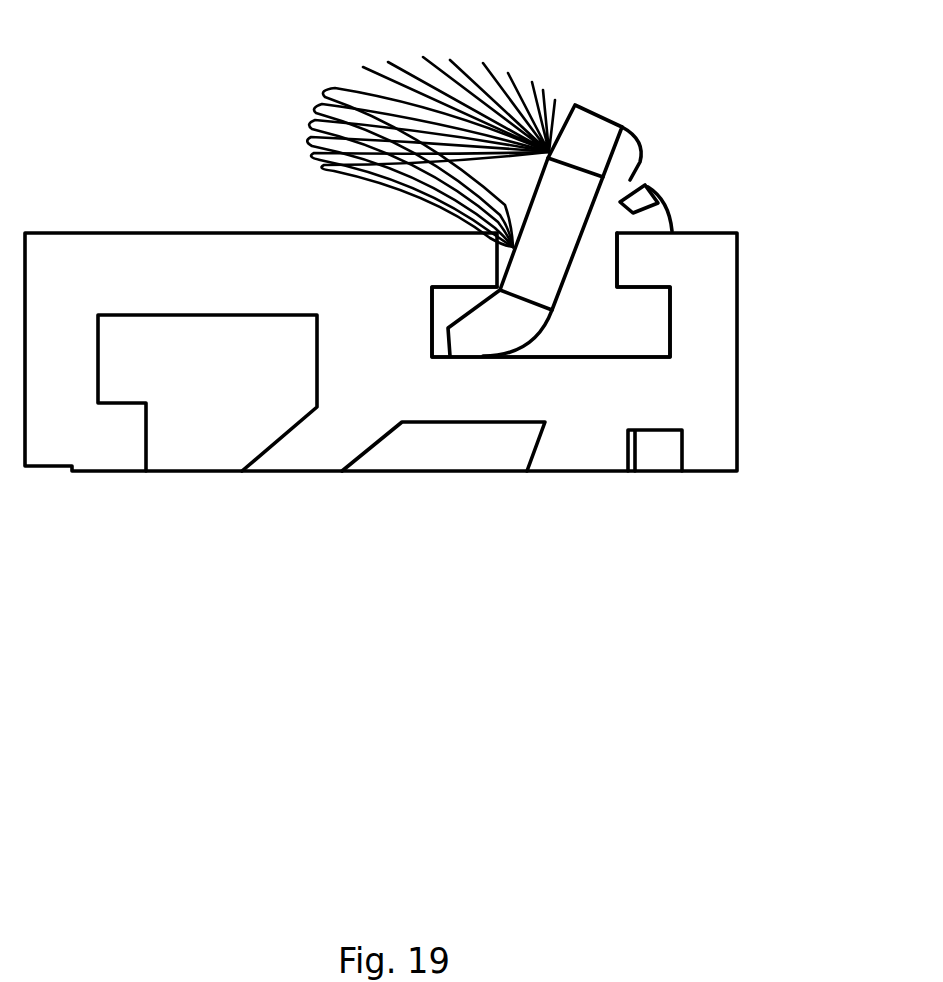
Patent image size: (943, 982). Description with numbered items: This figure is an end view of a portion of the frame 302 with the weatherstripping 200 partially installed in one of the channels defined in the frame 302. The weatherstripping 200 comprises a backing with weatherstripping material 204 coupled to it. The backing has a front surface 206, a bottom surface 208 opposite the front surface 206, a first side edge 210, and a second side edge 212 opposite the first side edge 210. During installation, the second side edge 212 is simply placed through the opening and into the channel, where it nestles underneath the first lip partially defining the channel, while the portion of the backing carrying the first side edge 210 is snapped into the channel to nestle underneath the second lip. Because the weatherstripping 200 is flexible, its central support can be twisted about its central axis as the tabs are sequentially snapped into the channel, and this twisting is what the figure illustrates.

The weatherstripping 200 is at (643, 62).
The weatherstripping material 204 is at (363, 67).
The front surface 206 is at (497, 288).
The bottom surface 208 is at (585, 323).
The first side edge 210 is at (625, 127).
The second side edge 212 is at (492, 332).
The frame 302 is at (90, 192).